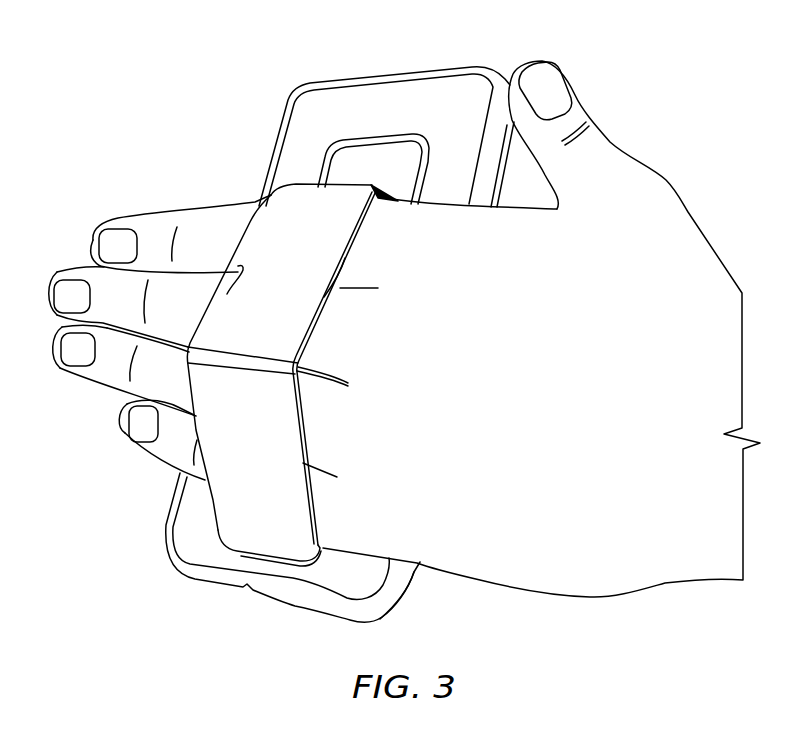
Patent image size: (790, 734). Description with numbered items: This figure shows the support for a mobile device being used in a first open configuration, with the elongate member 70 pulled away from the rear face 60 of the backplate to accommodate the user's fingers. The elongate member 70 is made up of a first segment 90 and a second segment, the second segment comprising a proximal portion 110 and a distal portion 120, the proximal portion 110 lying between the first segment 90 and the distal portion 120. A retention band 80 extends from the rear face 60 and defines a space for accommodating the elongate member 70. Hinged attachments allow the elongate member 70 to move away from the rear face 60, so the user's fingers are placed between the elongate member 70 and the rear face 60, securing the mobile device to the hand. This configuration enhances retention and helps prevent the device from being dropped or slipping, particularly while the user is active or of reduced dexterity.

The rear face 60 is at (388, 107).
The retention band 80 is at (338, 150).
The proximal portion 110 is at (280, 225).
The distal portion 120 is at (385, 198).
The elongate member 70 is at (202, 505).
The first segment 90 is at (250, 531).